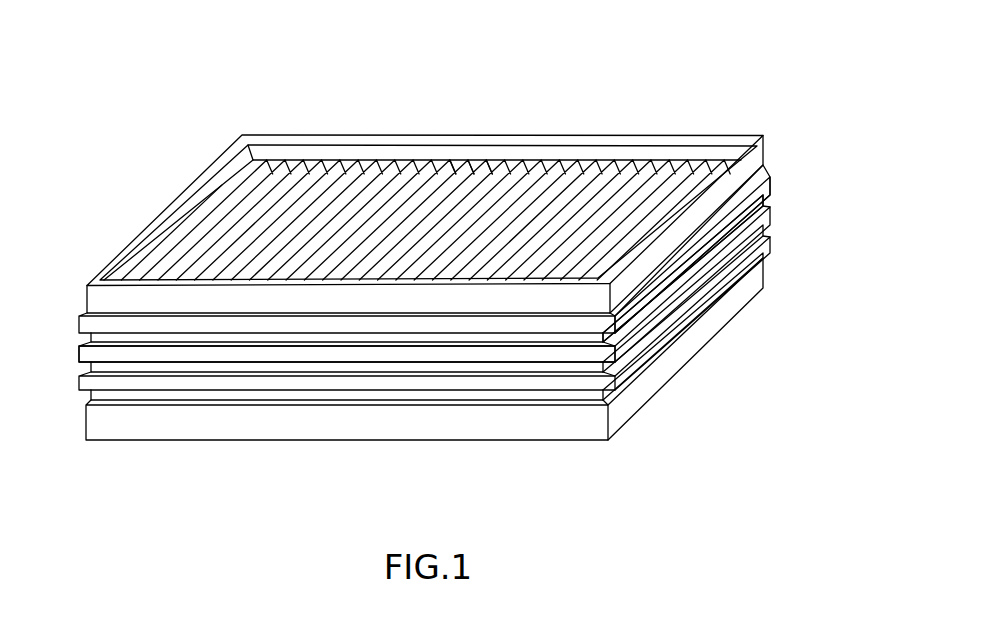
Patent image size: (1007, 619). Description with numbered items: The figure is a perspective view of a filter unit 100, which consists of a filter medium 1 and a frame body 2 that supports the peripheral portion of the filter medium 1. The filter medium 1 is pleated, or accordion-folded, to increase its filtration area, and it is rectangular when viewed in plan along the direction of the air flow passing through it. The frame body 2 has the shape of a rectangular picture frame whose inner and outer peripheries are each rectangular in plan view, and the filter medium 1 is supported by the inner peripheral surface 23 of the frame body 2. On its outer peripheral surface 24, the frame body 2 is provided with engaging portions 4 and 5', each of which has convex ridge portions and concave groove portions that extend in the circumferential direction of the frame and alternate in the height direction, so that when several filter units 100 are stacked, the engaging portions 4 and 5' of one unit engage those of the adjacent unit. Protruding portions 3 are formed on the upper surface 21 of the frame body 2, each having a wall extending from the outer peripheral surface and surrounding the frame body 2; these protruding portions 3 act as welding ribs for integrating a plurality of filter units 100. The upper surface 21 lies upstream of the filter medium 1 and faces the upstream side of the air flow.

The filter unit 100 is at (264, 30).
The filter medium 1 is at (360, 190).
The frame body 2 is at (790, 170).
The protruding portions 3 is at (758, 133).
The engaging portion 4 is at (733, 253).
The upper surface 21 is at (588, 152).
The inner peripheral surface 23 is at (477, 167).
The outer peripheral surface 24 is at (630, 407).
The engaging portion 5' is at (347, 419).